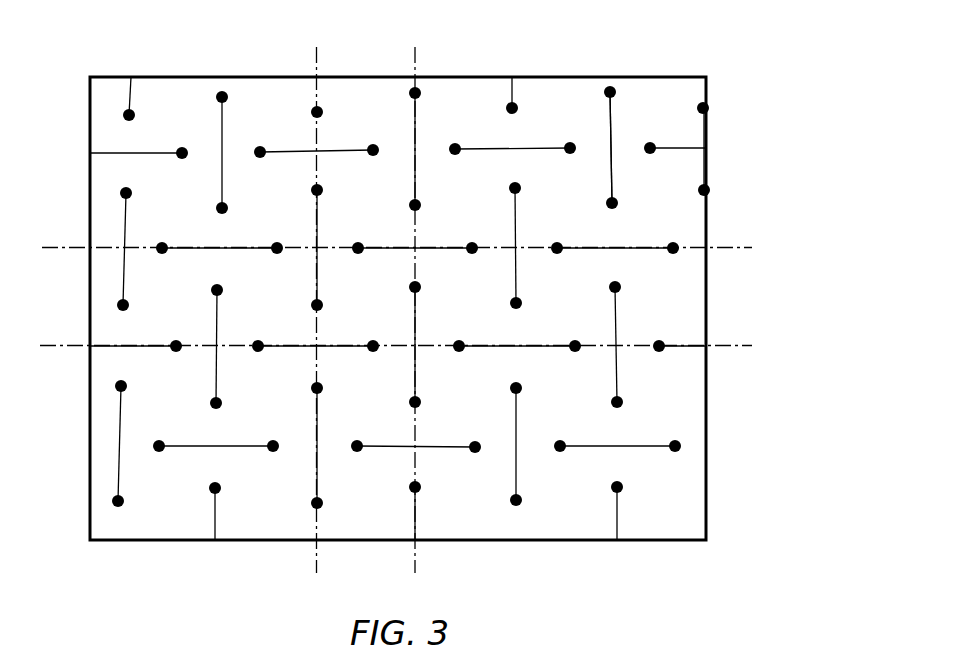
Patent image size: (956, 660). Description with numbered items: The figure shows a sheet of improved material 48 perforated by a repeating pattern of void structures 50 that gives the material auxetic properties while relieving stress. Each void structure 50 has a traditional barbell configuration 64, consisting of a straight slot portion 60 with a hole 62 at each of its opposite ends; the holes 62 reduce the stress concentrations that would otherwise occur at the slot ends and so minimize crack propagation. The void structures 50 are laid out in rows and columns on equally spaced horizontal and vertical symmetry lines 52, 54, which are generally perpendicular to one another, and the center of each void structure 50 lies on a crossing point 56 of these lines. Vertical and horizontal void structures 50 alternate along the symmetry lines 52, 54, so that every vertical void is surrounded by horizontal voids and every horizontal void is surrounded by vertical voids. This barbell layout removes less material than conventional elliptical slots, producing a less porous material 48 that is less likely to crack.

The improved material 48 is at (688, 423).
The void structures 50 is at (612, 123).
The horizontal symmetry lines 52 is at (410, 297).
The vertical symmetry lines 54 is at (366, 324).
The crossing point 56 is at (316, 247).
The slot portion 60 is at (538, 148).
The holes 62 is at (455, 143).
The traditional barbell configuration 64 is at (205, 177).